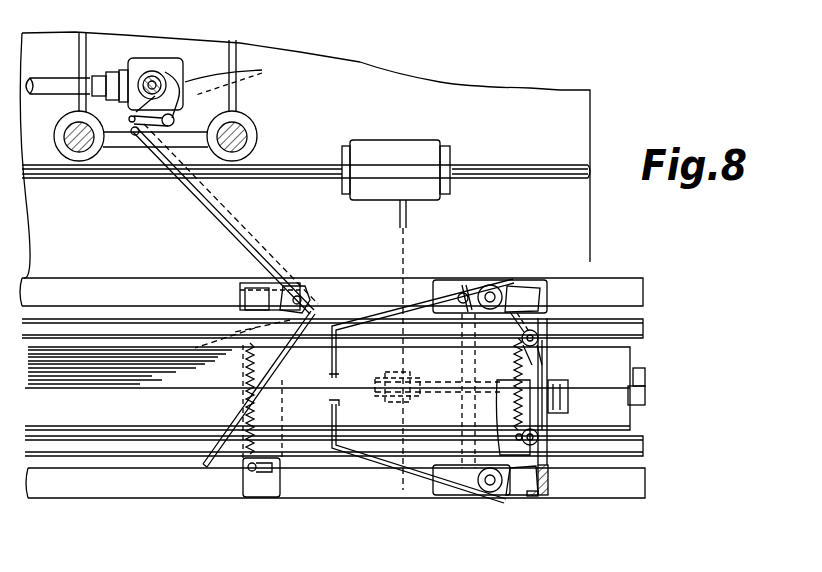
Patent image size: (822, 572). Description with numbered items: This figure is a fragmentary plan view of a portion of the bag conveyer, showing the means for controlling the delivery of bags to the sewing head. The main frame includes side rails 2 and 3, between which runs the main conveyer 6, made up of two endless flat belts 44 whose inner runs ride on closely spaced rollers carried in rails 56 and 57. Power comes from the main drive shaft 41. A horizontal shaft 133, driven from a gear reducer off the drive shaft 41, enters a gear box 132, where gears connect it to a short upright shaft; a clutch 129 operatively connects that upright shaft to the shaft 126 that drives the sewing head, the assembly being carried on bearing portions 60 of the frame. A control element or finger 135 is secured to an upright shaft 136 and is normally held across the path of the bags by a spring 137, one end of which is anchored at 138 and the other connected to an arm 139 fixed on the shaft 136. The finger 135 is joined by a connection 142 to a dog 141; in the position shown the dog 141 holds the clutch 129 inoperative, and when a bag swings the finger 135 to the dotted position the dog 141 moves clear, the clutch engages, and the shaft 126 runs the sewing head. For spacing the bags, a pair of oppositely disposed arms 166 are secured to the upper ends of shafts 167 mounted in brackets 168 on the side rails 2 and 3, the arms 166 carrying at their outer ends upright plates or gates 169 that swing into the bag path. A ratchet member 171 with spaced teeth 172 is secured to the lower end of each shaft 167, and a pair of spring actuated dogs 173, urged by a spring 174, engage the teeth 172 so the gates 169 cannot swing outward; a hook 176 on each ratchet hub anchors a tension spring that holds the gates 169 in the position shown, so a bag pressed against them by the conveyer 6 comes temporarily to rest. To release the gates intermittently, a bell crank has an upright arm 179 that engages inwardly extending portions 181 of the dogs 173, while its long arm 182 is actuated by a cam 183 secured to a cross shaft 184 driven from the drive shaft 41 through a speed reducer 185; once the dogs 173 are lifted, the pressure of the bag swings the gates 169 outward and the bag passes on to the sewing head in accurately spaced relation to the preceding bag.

The side rail 2 is at (635, 484).
The side rail 3 is at (630, 290).
The main conveyer 6 is at (382, 407).
The main drive shaft 41 is at (498, 165).
The endless flat belts 44 is at (50, 402).
The rail 56 is at (635, 330).
The rail 57 is at (642, 378).
The bearing ring 60 is at (256, 140).
The shaft 126 is at (155, 80).
The clutch 129 is at (185, 78).
The gear box 132 is at (148, 62).
The horizontal shaft 133 is at (40, 85).
The control element or finger 135 is at (214, 328).
The upright shaft 136 is at (302, 296).
The spring 137 is at (245, 398).
The anchor 138 is at (252, 498).
The arm 139 is at (246, 296).
The dog 141 is at (236, 76).
The connection 142 is at (200, 212).
The arms 166 is at (422, 292).
The shafts 167 is at (490, 286).
The brackets 168 is at (550, 486).
The upright plates or gates 169 is at (331, 372).
The ratchet member 171 is at (520, 286).
The teeth 172 is at (547, 295).
The spring actuated dogs 173 is at (548, 326).
The spring 174 is at (514, 402).
The hook 176 is at (470, 404).
The upright arm 179 is at (556, 392).
The inwardly extending portions 181 is at (538, 352).
The long arm 182 is at (505, 388).
The cam 183 is at (412, 378).
The cross shaft 184 is at (406, 216).
The speed reducer 185 is at (402, 150).